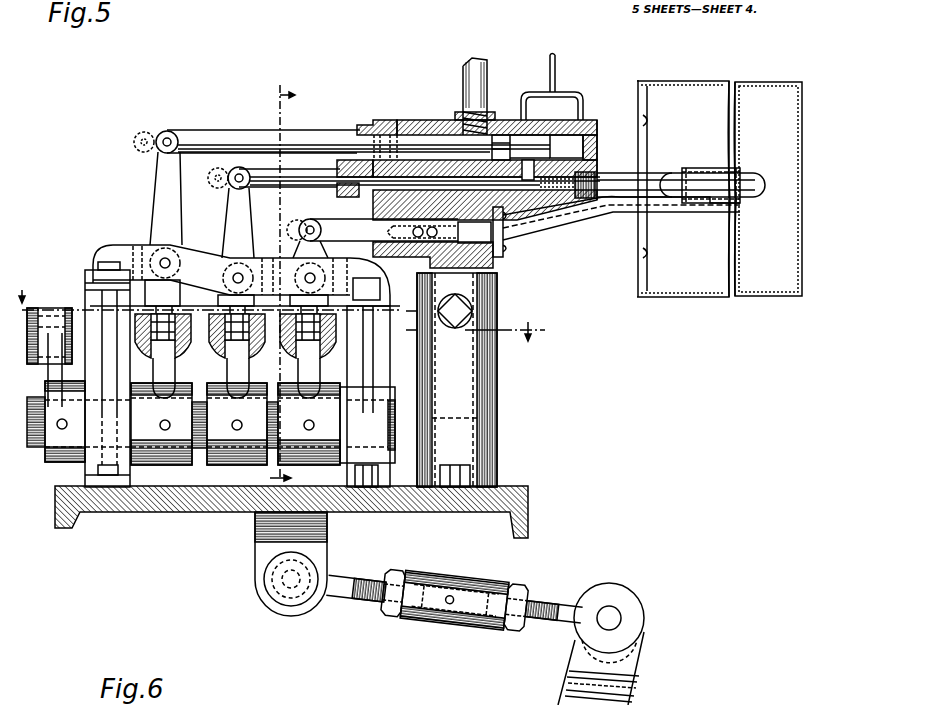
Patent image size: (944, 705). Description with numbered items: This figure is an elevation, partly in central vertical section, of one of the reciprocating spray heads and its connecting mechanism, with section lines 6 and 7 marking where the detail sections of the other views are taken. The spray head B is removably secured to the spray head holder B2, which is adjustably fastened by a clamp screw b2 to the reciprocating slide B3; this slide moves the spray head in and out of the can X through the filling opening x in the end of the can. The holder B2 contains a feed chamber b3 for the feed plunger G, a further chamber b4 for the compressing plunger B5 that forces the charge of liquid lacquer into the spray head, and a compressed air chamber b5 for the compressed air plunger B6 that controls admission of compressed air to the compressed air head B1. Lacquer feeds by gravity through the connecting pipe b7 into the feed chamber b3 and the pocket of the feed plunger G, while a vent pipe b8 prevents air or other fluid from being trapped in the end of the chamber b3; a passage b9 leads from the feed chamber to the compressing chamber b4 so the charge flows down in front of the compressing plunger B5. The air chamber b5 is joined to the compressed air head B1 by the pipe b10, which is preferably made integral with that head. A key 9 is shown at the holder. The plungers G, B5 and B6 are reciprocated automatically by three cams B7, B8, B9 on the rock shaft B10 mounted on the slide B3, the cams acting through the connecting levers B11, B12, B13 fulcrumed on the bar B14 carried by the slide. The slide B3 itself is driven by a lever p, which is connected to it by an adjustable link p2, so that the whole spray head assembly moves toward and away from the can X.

The feed plunger G is at (332, 133).
The spray head B is at (762, 180).
The compressed air head B1 is at (707, 167).
The spray head holder B2 is at (583, 130).
The feed chamber b3 is at (578, 153).
The reciprocating slide B3 is at (190, 512).
The compressing chamber b4 is at (558, 188).
The compressing plunger B5 is at (318, 176).
The compressed air chamber b5 is at (482, 232).
The compressed air plunger B6 is at (372, 230).
The cam B7 is at (186, 345).
The connecting pipe b7 is at (486, 70).
The cam B8 is at (260, 345).
The vent pipe b8 is at (560, 97).
The cam B9 is at (329, 345).
The passage b9 is at (527, 172).
The key 9 is at (502, 136).
The rock shaft B10 is at (42, 440).
The pipe b10 is at (624, 212).
The connecting lever B11 is at (166, 198).
The connecting lever B12 is at (404, 212).
The connecting lever B13 is at (310, 253).
The bar B14 is at (245, 279).
The clamp screw b2 is at (498, 305).
The filling opening x is at (645, 270).
The can X is at (745, 298).
The lever p is at (637, 682).
The adjustable link p2 is at (452, 616).
The section line 6- 6 is at (279, 315).
The section line 7- 7 is at (275, 278).